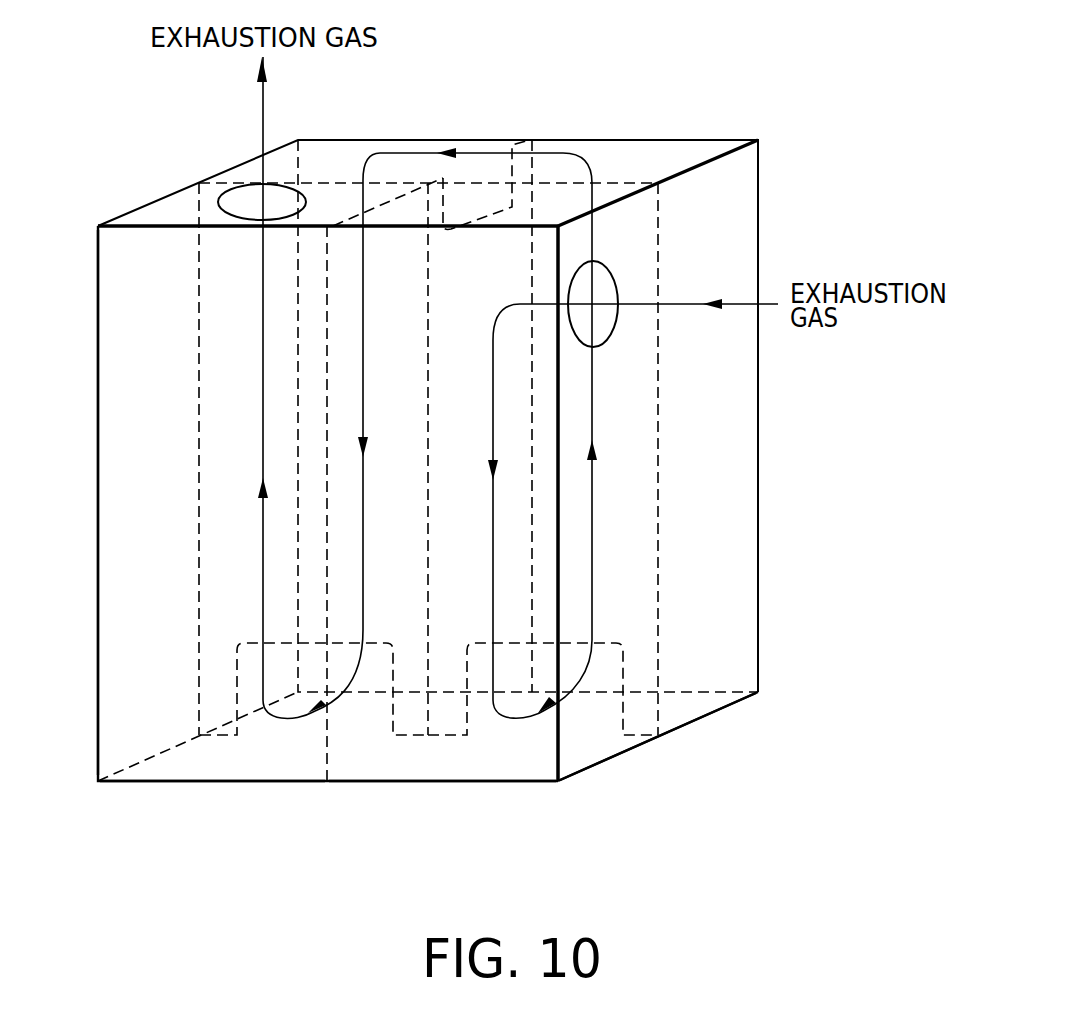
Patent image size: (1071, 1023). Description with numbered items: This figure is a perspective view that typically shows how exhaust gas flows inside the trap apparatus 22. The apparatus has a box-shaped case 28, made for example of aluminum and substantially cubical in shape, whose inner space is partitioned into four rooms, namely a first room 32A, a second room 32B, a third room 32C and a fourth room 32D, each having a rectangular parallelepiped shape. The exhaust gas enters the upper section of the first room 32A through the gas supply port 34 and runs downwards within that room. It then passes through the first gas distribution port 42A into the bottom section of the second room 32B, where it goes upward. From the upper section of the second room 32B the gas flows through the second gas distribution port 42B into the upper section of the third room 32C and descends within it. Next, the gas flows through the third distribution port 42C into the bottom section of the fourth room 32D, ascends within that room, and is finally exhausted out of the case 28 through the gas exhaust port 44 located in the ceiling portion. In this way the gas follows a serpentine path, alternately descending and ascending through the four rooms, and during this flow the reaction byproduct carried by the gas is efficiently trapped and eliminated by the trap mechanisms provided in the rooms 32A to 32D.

The trap apparatus 22 is at (248, 879).
The case 28 is at (92, 556).
The first room 32A is at (480, 763).
The second room 32B is at (697, 707).
The third room 32C is at (333, 153).
The fourth room 32D is at (178, 765).
The gas supply port 34 is at (632, 267).
The first gas distribution port 42A is at (607, 680).
The second gas distribution port 42B is at (476, 196).
The third distribution port 42C is at (250, 660).
The gas exhaust port 44 is at (226, 184).